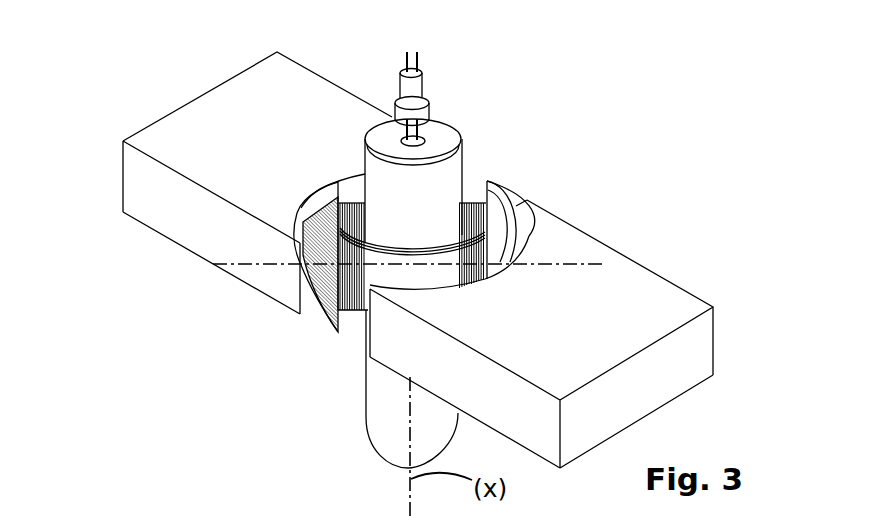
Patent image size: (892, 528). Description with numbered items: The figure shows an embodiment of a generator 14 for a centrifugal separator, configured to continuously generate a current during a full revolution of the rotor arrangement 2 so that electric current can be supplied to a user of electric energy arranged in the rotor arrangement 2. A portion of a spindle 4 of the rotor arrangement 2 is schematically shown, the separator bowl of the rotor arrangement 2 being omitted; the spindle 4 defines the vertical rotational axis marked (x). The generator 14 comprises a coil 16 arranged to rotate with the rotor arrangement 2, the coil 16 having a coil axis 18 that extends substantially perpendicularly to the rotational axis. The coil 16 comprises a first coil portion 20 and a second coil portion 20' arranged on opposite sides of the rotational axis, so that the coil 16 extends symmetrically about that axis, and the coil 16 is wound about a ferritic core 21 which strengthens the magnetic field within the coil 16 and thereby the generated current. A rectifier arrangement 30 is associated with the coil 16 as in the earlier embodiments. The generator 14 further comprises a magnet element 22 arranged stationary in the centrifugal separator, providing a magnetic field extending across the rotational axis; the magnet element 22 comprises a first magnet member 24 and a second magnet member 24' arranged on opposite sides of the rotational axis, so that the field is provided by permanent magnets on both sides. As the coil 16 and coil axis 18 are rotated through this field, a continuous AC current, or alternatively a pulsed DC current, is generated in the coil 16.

The rotor arrangement 2 is at (255, 428).
The spindle 4 is at (390, 413).
The generator 14 is at (633, 152).
The coil 16 is at (470, 187).
The coil axis 18 is at (248, 265).
The first coil portion 20 is at (334, 290).
The second coil portion 20' is at (514, 229).
The ferritic core 21 is at (320, 310).
The magnet element 22 is at (355, 78).
The first magnet member 24 is at (257, 183).
The second magnet member 24' is at (541, 334).
The rectifier arrangement 30 is at (427, 95).